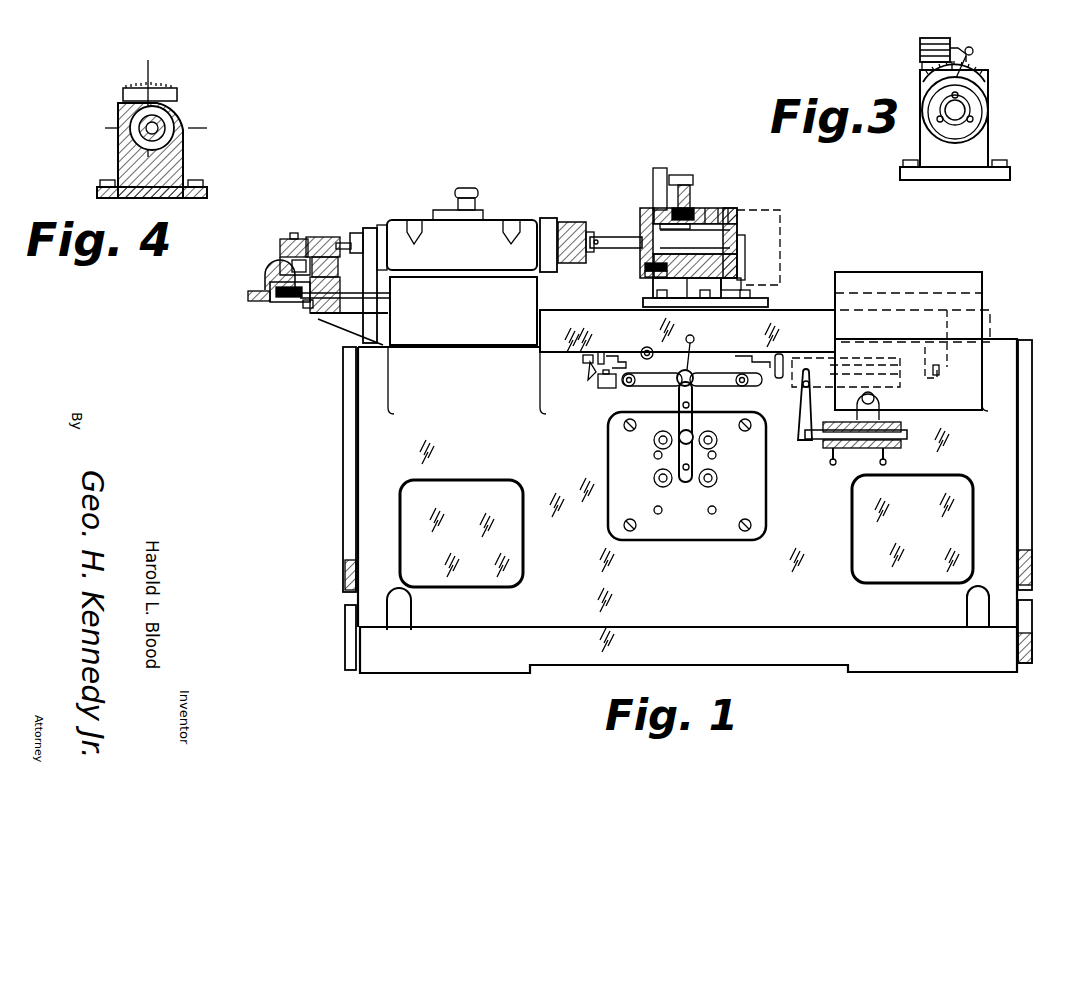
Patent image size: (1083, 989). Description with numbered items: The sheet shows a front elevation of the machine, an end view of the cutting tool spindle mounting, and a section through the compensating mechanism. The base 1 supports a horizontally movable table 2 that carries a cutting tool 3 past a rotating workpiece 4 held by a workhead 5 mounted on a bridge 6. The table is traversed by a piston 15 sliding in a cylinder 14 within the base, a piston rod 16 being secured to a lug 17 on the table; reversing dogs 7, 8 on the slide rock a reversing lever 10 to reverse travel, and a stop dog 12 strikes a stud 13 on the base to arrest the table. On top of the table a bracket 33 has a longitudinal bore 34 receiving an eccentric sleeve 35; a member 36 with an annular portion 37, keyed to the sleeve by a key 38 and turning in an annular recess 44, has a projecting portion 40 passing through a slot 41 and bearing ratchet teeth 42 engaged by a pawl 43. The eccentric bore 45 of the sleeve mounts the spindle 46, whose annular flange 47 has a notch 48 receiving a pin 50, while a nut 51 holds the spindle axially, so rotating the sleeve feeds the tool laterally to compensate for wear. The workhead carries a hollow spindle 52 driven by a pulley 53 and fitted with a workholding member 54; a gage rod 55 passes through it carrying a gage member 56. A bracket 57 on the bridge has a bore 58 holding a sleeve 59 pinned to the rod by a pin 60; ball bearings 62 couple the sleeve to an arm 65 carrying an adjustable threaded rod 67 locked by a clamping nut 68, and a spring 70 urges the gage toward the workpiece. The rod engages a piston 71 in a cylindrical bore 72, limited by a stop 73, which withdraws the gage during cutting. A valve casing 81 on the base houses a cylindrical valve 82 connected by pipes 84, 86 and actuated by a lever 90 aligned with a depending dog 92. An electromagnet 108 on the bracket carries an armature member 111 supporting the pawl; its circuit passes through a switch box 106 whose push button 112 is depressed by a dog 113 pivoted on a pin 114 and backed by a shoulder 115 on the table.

In FIG. 1, the base 1 is at (1005, 435).
In FIG. 1, the table 2 is at (808, 320).
In FIG. 1, the cutting tool 3 is at (603, 240).
In FIG. 1, the workpiece 4 is at (594, 238).
In FIG. 1, the workhead 5 is at (494, 228).
In FIG. 1, the bridge 6 is at (522, 298).
In FIG. 1, the reversing dog 7 is at (616, 367).
In FIG. 1, the reversing dog 8 is at (748, 362).
In FIG. 1, the reversing lever 10 is at (695, 378).
In FIG. 1, the stop dog 12 is at (601, 352).
In FIG. 1, the stud 13 is at (645, 348).
In FIG. 1, the cylinder 14 is at (893, 385).
In FIG. 1, the piston 15 is at (830, 362).
In FIG. 1, the piston rod 16 is at (925, 360).
In FIG. 1, the lug 17 is at (939, 372).
In FIG. 4, the bracket 33 is at (165, 198).
In FIG. 3, the bracket 33 is at (980, 145).
In FIG. 1, the bracket 33 is at (655, 288).
In FIG. 4, the longitudinal bore 34 is at (175, 128).
In FIG. 1, the longitudinal bore 34 is at (714, 220).
In FIG. 4, the eccentric sleeve 35 is at (180, 145).
In FIG. 1, the eccentric sleeve 35 is at (705, 218).
In FIG. 4, the member 36 is at (122, 102).
In FIG. 3, the member 36 is at (925, 85).
In FIG. 1, the member 36 is at (698, 214).
In FIG. 1, the annular portion 37 is at (688, 282).
In FIG. 1, the key 38 is at (695, 239).
In FIG. 4, the projecting portion 40 is at (178, 94).
In FIG. 3, the projecting portion 40 is at (975, 80).
In FIG. 1, the projecting portion 40 is at (678, 208).
In FIG. 1, the slot 41 is at (676, 222).
In FIG. 4, the ratchet teeth 42 is at (165, 93).
In FIG. 3, the ratchet teeth 42 is at (930, 72).
In FIG. 3, the pawl 43 is at (973, 54).
In FIG. 1, the pawl 43 is at (684, 176).
In FIG. 1, the annular recess 44 is at (718, 274).
In FIG. 4, the eccentric bore 45 is at (146, 134).
In FIG. 1, the eccentric bore 45 is at (724, 222).
In FIG. 4, the spindle 46 is at (133, 122).
In FIG. 3, the spindle 46 is at (958, 110).
In FIG. 1, the spindle 46 is at (740, 240).
In FIG. 1, the annular flange 47 is at (646, 256).
In FIG. 1, the notch 48 is at (648, 268).
In FIG. 1, the pin 50 is at (650, 275).
In FIG. 3, the nut 51 is at (970, 116).
In FIG. 1, the nut 51 is at (742, 246).
In FIG. 1, the hollow spindle 52 is at (356, 233).
In FIG. 1, the pulley 53 is at (372, 228).
In FIG. 1, the workholding member 54 is at (562, 232).
In FIG. 1, the gage rod 55 is at (340, 243).
In FIG. 1, the gage member 56 is at (575, 230).
In FIG. 1, the bracket 57 is at (342, 323).
In FIG. 1, the bore 58 is at (318, 238).
In FIG. 1, the sleeve 59 is at (297, 238).
In FIG. 1, the pin 60 is at (292, 252).
In FIG. 1, the ball bearings 62 is at (286, 240).
In FIG. 1, the arm 65 is at (292, 258).
In FIG. 1, the threaded rod 67 is at (290, 302).
In FIG. 1, the clamping nut 68 is at (256, 291).
In FIG. 1, the spring 70 is at (268, 272).
In FIG. 1, the piston 71 is at (315, 305).
In FIG. 1, the cylindrical bore 72 is at (325, 312).
In FIG. 1, the stop 73 is at (308, 304).
In FIG. 1, the valve casing 81 is at (895, 446).
In FIG. 1, the cylindrical valve 82 is at (825, 440).
In FIG. 1, the pipe 84 is at (886, 462).
In FIG. 1, the pipe 86 is at (832, 465).
In FIG. 1, the lever 90 is at (804, 405).
In FIG. 1, the dog 92 is at (778, 378).
In FIG. 1, the switch box 106 is at (610, 388).
In FIG. 3, the electromagnet 108 is at (934, 44).
In FIG. 3, the armature member 111 is at (958, 49).
In FIG. 1, the push button 112 is at (598, 386).
In FIG. 1, the dog 113 is at (588, 372).
In FIG. 1, the pin 114 is at (575, 350).
In FIG. 1, the shoulder 115 is at (583, 357).